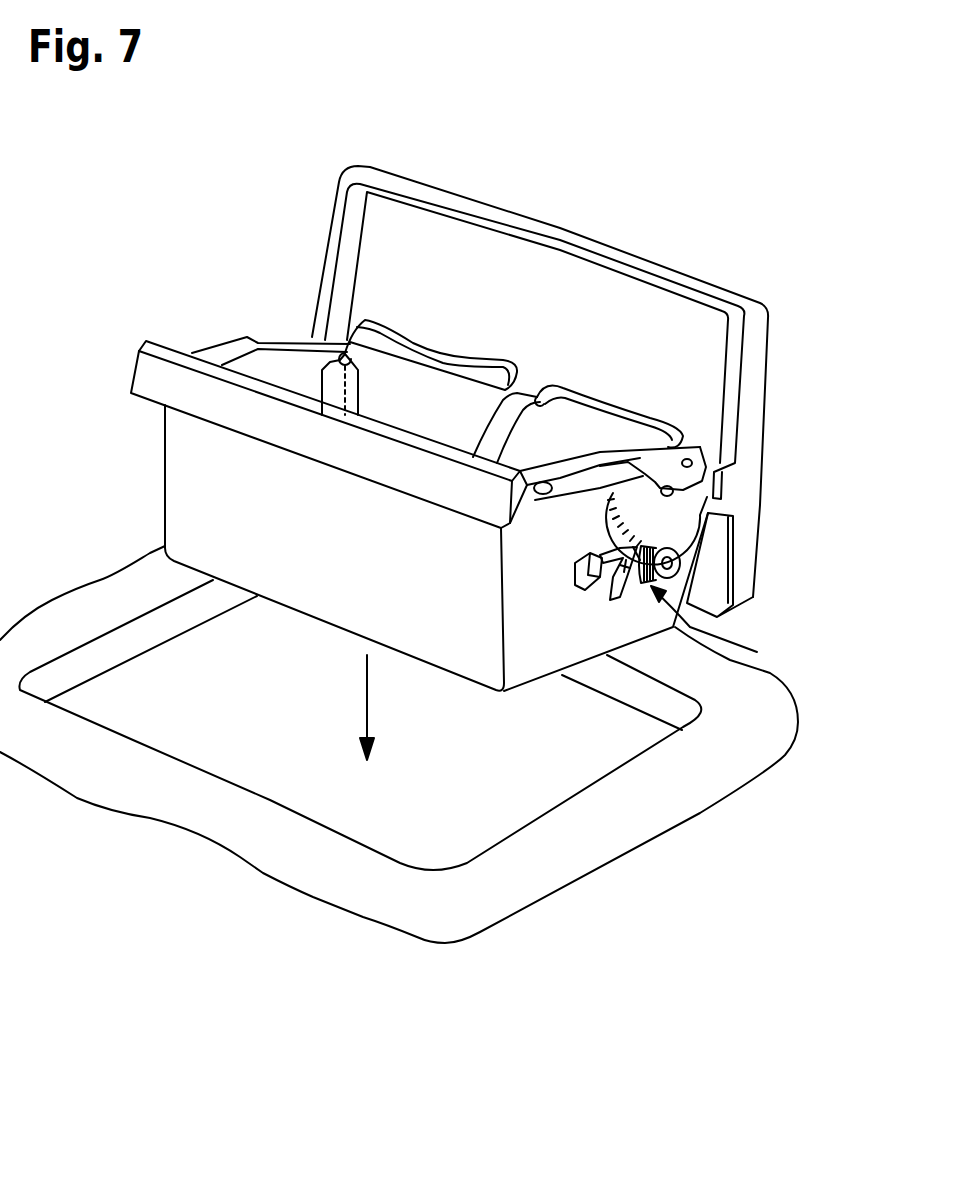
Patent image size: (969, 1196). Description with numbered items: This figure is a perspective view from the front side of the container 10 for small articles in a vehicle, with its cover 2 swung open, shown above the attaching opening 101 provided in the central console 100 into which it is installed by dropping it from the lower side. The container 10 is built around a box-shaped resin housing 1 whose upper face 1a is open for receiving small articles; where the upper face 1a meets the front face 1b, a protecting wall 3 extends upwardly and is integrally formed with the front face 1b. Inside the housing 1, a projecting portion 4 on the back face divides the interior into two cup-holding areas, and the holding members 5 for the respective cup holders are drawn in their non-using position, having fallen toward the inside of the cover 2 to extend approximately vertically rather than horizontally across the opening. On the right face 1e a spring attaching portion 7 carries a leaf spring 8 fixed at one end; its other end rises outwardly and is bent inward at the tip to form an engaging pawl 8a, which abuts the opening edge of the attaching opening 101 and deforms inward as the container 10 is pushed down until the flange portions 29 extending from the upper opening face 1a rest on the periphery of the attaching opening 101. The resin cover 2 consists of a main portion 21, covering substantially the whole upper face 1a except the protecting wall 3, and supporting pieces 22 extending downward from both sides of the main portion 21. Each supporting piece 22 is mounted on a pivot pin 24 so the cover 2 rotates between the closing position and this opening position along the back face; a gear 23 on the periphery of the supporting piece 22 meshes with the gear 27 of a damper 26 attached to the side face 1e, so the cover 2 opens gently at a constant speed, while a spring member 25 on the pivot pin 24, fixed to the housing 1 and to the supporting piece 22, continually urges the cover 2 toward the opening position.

The housing 1 is at (407, 500).
The upper face 1a is at (230, 350).
The front face 1b is at (292, 583).
The right face 1e is at (540, 650).
The cover 2 is at (562, 381).
The protecting wall 3 is at (148, 375).
The projecting portion 4 is at (490, 432).
The holding members 5 is at (450, 355).
The spring attaching portion 7 is at (572, 578).
The leaf spring 8 is at (613, 598).
The engaging pawl 8a is at (631, 576).
The container 10 is at (562, 366).
The main portion 21 is at (693, 323).
The supporting pieces 22 is at (710, 537).
The gear 23 is at (617, 513).
The pivot pin 24 is at (675, 493).
The spring member 25 is at (722, 497).
The damper 26 is at (718, 629).
The gear 27 is at (681, 563).
The flange portions 29 is at (352, 475).
The central console 100 is at (423, 908).
The attaching opening 101 is at (242, 768).